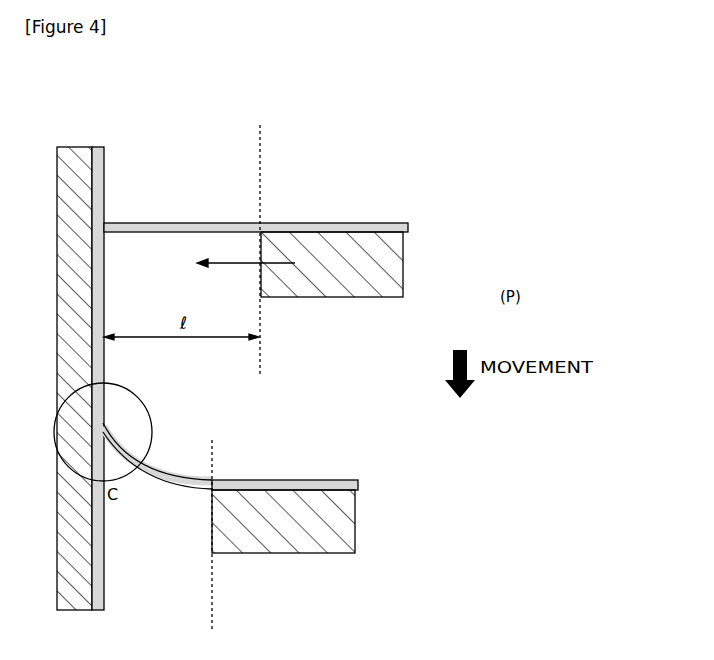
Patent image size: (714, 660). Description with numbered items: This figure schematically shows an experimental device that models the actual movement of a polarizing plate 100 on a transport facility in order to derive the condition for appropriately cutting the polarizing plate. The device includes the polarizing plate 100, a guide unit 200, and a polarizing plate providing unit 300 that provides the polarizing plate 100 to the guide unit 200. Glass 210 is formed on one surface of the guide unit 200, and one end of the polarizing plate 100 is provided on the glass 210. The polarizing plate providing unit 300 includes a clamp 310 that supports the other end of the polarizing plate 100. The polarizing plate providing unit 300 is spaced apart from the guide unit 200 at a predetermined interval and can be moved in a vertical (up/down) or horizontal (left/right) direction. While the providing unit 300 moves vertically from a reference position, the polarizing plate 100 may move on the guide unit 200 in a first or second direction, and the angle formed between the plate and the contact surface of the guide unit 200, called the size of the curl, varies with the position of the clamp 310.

The polarizing plate 100 is at (183, 222).
The guide unit 200 is at (72, 156).
The glass 210 is at (103, 160).
The polarizing plate providing unit 300 is at (348, 515).
The clamp 310 is at (320, 478).